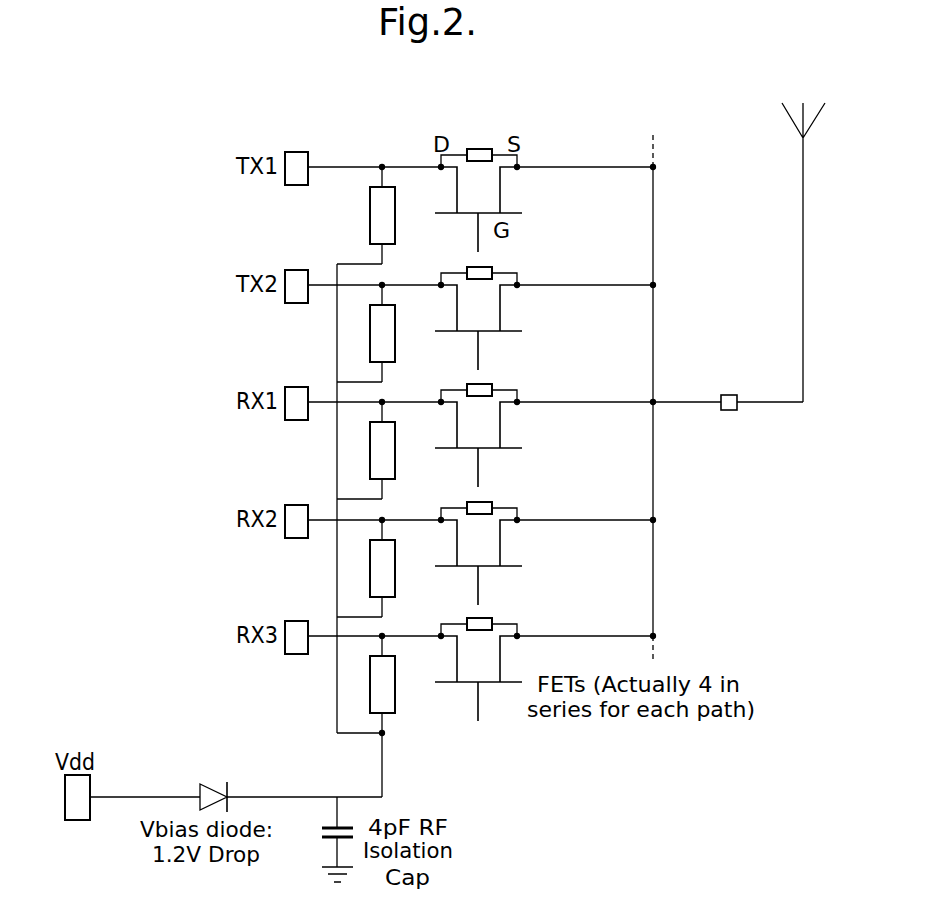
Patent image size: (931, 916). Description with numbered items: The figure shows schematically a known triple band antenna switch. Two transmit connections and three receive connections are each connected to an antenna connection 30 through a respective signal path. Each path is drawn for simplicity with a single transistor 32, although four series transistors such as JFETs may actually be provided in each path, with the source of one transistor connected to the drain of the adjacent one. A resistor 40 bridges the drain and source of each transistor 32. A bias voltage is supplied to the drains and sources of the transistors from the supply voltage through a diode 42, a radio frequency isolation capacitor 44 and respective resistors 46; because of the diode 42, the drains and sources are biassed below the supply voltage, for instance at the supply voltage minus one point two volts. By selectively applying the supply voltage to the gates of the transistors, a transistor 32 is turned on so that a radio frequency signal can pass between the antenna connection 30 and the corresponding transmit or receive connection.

The antenna connection 30 is at (728, 395).
The transistor 32 is at (500, 185).
The resistor 40 is at (486, 150).
The diode 42 is at (211, 782).
The radio frequency isolation capacitor 44 is at (330, 827).
The resistors 46 is at (384, 686).